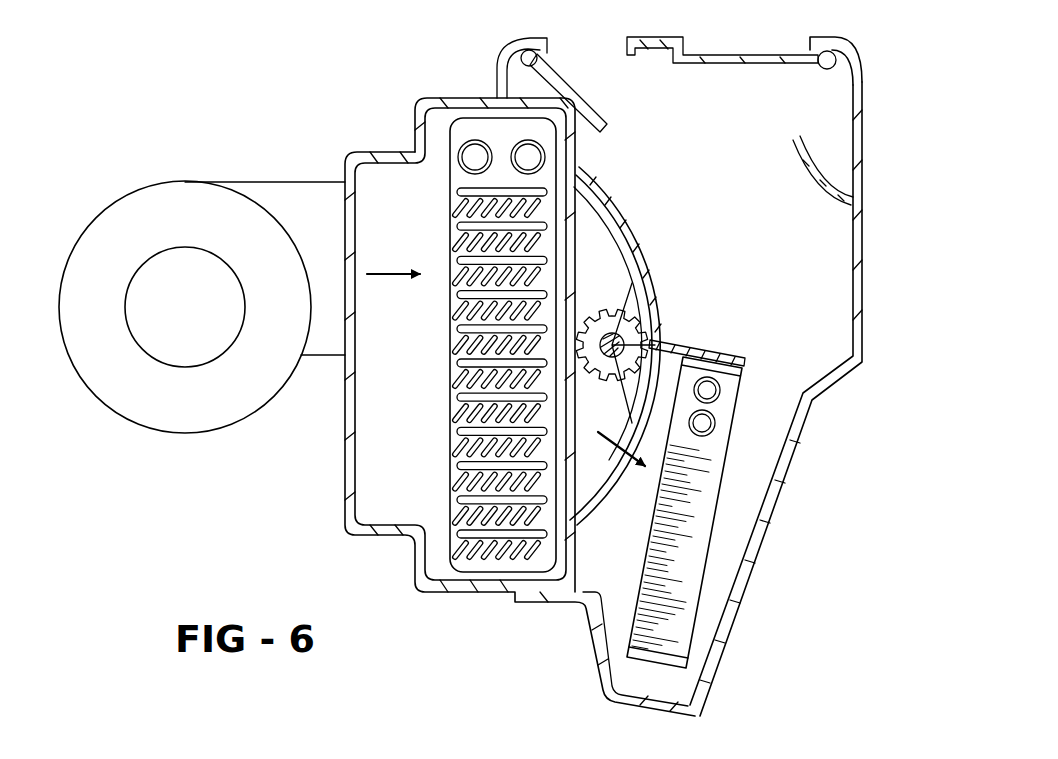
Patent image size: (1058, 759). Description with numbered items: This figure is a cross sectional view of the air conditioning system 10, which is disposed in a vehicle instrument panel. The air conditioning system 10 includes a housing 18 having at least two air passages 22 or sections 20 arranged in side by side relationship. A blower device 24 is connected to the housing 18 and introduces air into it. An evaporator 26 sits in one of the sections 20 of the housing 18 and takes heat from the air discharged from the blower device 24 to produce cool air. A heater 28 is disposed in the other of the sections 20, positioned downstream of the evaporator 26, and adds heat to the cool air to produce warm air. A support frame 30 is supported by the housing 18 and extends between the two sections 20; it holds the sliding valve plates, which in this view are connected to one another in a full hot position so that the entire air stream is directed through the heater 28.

The air conditioning system 10 is at (426, 94).
The housing 18 is at (870, 188).
The sections 20 is at (413, 417).
The air passages 22 is at (761, 202).
The blower device 24 is at (175, 205).
The evaporator 26 is at (473, 130).
The heater 28 is at (685, 590).
The support frame 30 is at (582, 153).